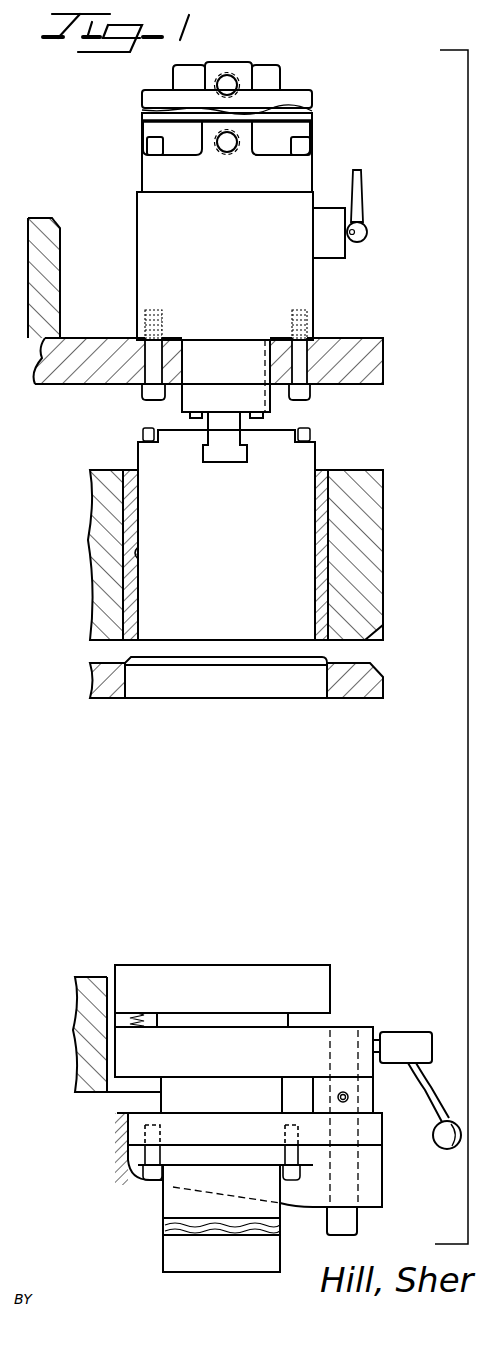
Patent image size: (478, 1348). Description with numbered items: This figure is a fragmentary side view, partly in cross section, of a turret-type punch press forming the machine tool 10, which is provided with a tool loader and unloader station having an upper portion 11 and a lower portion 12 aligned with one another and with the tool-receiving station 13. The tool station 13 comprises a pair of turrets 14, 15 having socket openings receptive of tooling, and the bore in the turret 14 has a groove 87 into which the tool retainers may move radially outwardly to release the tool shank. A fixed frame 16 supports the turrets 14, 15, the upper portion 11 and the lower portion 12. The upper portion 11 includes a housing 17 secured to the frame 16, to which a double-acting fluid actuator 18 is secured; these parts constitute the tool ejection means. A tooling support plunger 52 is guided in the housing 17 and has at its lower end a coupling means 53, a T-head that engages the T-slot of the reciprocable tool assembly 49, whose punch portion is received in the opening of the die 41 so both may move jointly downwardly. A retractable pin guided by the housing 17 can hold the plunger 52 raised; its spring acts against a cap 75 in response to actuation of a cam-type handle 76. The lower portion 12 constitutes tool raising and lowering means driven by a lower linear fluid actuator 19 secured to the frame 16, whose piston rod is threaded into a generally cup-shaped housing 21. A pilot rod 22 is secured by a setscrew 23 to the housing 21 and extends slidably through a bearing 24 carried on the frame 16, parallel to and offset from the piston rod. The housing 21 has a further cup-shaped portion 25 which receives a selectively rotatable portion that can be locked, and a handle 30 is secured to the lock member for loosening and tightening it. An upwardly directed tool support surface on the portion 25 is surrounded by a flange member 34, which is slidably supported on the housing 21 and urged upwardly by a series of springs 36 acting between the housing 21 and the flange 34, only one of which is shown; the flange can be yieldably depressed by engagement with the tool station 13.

The machine tool 10 is at (82, 706).
The upper portion of the tool loader and unloader 11 is at (116, 284).
The lower portion of the tool loader and unloader 12 is at (58, 985).
The tool-receiving station 13 is at (90, 655).
The turret 14 is at (105, 582).
The turret 15 is at (112, 698).
The frame 16 is at (356, 338).
The housing 17 is at (224, 244).
The double-acting fluid actuator 18 is at (300, 130).
The lower linear fluid actuator 19 is at (163, 1162).
The housing 21 is at (240, 1066).
The pilot rod 22 is at (345, 1222).
The setscrew 23 is at (350, 1098).
The bearing 24 is at (382, 1172).
The cup-shaped housing portion 25 is at (213, 1020).
The handle 30 is at (403, 1038).
The flange member 34 is at (320, 983).
The springs 36 is at (148, 1017).
The die 41 is at (218, 687).
The tool assembly 49 is at (236, 537).
The tooling support plunger 52 is at (226, 379).
The coupling means 53 is at (212, 453).
The cap 75 is at (330, 258).
The cam-type handle 76 is at (367, 233).
The groove 87 is at (140, 553).